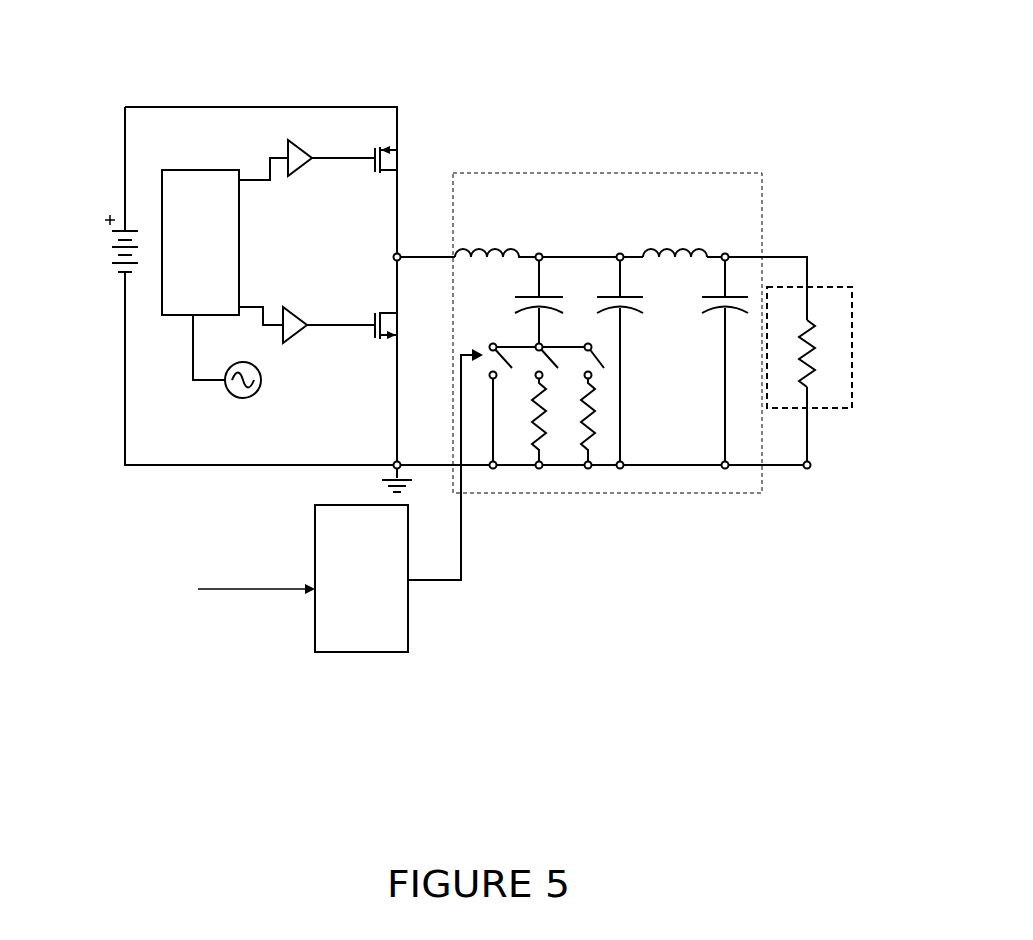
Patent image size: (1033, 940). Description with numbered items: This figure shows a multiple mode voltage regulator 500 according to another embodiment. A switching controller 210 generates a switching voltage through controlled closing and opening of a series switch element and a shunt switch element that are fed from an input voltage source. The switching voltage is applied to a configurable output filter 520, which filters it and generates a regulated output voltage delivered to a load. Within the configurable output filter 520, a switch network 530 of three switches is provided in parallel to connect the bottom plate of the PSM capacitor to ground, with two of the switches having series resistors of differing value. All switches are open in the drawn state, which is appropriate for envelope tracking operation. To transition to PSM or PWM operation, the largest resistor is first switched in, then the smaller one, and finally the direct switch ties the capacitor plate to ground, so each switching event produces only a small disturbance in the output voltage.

The multiple mode voltage regulator 500 is at (480, 95).
The switching controller 210 is at (212, 314).
The configurable output filter 520 is at (604, 233).
The switch network 530 is at (576, 485).